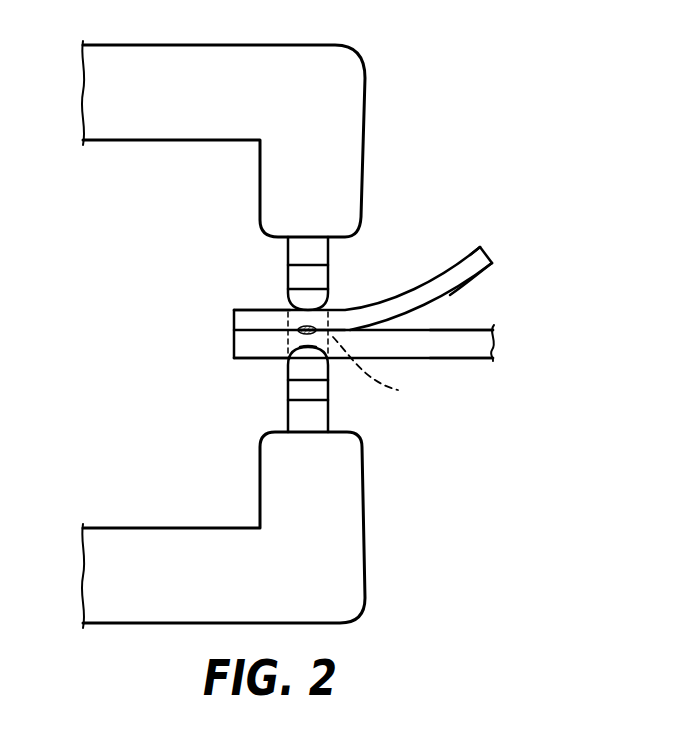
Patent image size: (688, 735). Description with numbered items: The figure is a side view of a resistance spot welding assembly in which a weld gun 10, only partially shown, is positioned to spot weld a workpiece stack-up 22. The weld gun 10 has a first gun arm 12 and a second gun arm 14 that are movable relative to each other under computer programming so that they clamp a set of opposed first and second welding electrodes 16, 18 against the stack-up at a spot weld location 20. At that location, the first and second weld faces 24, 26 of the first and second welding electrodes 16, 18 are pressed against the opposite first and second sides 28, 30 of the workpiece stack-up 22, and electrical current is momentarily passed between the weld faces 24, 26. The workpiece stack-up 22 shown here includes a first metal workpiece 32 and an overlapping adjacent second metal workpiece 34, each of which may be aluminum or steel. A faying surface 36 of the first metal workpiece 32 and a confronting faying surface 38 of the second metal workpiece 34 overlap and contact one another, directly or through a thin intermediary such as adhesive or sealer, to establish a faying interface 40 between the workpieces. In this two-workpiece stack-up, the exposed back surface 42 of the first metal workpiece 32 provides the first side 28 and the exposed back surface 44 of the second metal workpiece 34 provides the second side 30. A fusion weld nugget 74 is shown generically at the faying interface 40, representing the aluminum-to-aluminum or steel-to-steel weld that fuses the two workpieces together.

The weld gun 10 is at (468, 158).
The first gun arm 12 is at (365, 518).
The second gun arm 14 is at (365, 122).
The first welding electrode 16 is at (312, 373).
The second welding electrode 18 is at (296, 300).
The spot weld location 20 is at (398, 390).
The workpiece stack-up 22 is at (226, 329).
The first weld face 24 is at (337, 338).
The second weld face 26 is at (340, 330).
The first side of the workpiece stack-up 28 is at (272, 359).
The second side of the workpiece stack-up 30 is at (258, 309).
The first metal workpiece 32 is at (430, 352).
The second metal workpiece 34 is at (446, 280).
The faying surface of the first metal workpiece 36 is at (470, 328).
The faying surface of the second metal workpiece 38 is at (476, 293).
The faying interface 40 is at (298, 336).
The exposed back surface of the first metal workpiece 42 is at (473, 358).
The exposed back surface of the second metal workpiece 44 is at (479, 254).
The fusion weld nugget 74 is at (330, 330).